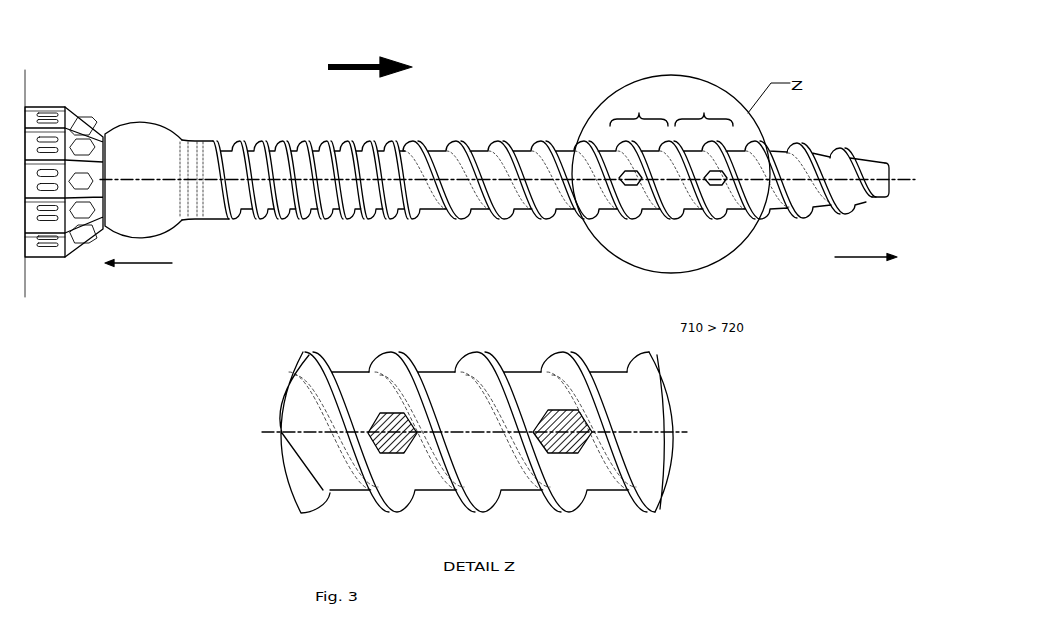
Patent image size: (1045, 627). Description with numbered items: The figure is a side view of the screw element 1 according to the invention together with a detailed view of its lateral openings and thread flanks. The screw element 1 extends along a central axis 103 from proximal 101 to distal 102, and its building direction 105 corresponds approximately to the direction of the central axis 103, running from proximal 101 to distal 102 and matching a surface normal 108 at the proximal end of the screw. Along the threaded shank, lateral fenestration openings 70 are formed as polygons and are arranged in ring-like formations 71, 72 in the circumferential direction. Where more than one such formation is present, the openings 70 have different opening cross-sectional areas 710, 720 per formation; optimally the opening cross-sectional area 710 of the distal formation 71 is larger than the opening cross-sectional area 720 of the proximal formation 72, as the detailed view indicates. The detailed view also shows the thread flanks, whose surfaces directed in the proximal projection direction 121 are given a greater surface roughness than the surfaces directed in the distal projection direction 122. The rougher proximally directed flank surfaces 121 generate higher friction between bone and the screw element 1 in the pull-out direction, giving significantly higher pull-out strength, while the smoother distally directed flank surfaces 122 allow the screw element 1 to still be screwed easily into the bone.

The screw element 1 is at (228, 72).
The surface normal 108 is at (64, 183).
The proximal direction 101 is at (137, 279).
The distal direction 102 is at (881, 257).
The building direction 105 is at (370, 74).
The lateral fenestration opening 70 is at (630, 186).
The distal ring-like formation 71 is at (704, 107).
The proximal ring-like formation 72 is at (639, 107).
The central axis 103 is at (889, 183).
The proximal projection direction of thread flank 121 is at (553, 362).
The distal projection direction of thread flank 122 is at (570, 503).
The opening cross-sectional area of distal formation 710 is at (565, 410).
The opening cross-sectional area of proximal formation 720 is at (392, 412).